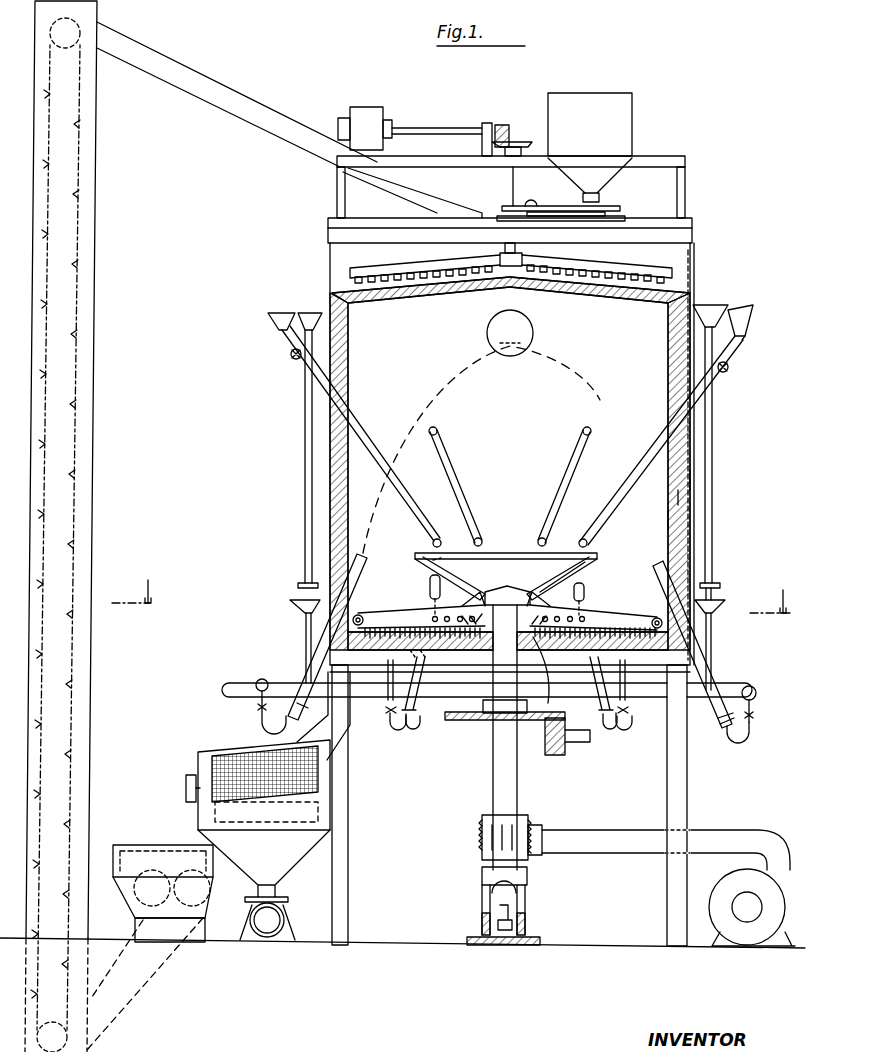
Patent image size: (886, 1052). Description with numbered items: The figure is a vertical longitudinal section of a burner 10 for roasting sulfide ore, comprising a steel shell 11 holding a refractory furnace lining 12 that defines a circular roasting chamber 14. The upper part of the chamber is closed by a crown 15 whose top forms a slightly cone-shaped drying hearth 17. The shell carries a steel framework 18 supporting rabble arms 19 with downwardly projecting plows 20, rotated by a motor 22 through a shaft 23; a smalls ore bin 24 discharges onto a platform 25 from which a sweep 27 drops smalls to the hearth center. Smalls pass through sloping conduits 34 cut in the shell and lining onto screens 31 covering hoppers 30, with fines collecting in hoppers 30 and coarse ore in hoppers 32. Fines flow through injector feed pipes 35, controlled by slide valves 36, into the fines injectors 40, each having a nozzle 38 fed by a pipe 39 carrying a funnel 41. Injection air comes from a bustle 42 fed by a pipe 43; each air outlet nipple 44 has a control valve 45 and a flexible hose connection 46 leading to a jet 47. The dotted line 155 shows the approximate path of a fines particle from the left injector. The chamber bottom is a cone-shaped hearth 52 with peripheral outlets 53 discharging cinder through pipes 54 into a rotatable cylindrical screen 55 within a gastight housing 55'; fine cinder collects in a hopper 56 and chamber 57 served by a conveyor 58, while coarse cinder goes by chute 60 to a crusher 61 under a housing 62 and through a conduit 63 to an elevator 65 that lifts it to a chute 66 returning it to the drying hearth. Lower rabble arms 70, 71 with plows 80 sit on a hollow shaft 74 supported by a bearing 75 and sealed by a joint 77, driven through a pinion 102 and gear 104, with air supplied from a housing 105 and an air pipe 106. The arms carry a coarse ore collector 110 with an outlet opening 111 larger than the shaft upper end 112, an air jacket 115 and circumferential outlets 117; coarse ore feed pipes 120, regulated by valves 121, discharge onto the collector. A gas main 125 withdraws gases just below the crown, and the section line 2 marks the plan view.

The section line 2 is at (452, 594).
The burner 10 is at (693, 459).
The steel shell 11 is at (691, 481).
The furnace lining 12 is at (680, 499).
The roasting chamber 14 is at (662, 524).
The crown 15 is at (611, 293).
The drying hearth 17 is at (673, 272).
The steel framework 18 is at (686, 196).
The rabble arms 19 is at (693, 240).
The plows 20 is at (606, 276).
The motor 22 is at (370, 107).
The shaft 23 is at (511, 187).
The smalls ore bin 24 is at (625, 122).
The platform 25 is at (622, 218).
The sweep 27 is at (603, 206).
The hoppers 30 is at (726, 322).
The sloping screens 31 is at (712, 320).
The hoppers 32 is at (753, 320).
The conduits 34 is at (692, 290).
The injector feed pipes 35 is at (713, 410).
The slide valves 36 is at (714, 580).
The nozzle 38 is at (362, 564).
The pipe 39 is at (713, 632).
The fines injectors 40 is at (704, 683).
The funnel 41 is at (721, 588).
The bustle 42 is at (740, 686).
The pipe 43 is at (240, 678).
The air outlet nipple 44 is at (757, 693).
The control valve 45 is at (756, 715).
The flexible hose connection 46 is at (752, 742).
The jet 47 is at (722, 730).
The hearth 52 is at (412, 702).
The outlets 53 is at (320, 650).
The pipes 54 is at (340, 738).
The rotatable cylindrical screen 55 is at (264, 768).
The gastight housing 55' is at (173, 771).
The hopper 56 is at (282, 858).
The chamber 57 is at (289, 899).
The conveyor 58 is at (267, 938).
The chute 60 is at (190, 846).
The crusher 61 is at (200, 906).
The housing 62 is at (124, 845).
The conduit 63 is at (110, 982).
The elevator 65 is at (95, 470).
The chute 66 is at (238, 95).
The rabble arm 70 is at (383, 612).
The rabble arm 71 is at (594, 616).
The hollow shaft 74 is at (493, 777).
The bearing 75 is at (488, 940).
The joint 77 is at (550, 700).
The plows 80 is at (556, 592).
The pinion 102 is at (550, 752).
The gear 104 is at (490, 720).
The housing 105 is at (520, 818).
The air pipe 106 is at (614, 830).
The coarse ore collector 110 is at (493, 550).
The outlet opening 111 is at (498, 596).
The upper end of shaft 112 is at (531, 595).
The air jacket 115 is at (588, 545).
The circumferential outlets 117 is at (597, 568).
The coarse ore feed pipes 120 is at (729, 367).
The valves 121 is at (729, 372).
The gas main 125 is at (488, 331).
The dotted line 155 is at (436, 392).